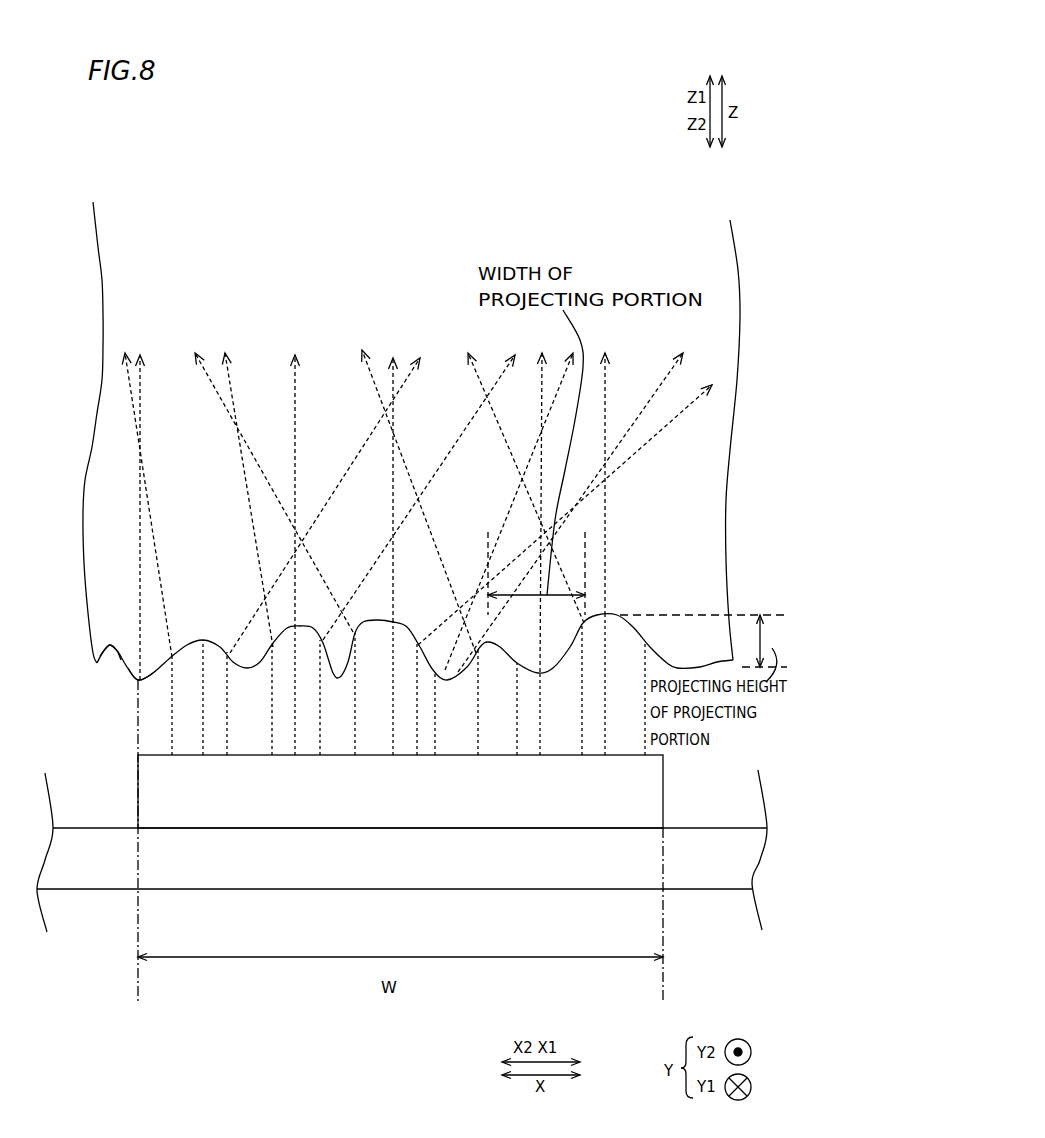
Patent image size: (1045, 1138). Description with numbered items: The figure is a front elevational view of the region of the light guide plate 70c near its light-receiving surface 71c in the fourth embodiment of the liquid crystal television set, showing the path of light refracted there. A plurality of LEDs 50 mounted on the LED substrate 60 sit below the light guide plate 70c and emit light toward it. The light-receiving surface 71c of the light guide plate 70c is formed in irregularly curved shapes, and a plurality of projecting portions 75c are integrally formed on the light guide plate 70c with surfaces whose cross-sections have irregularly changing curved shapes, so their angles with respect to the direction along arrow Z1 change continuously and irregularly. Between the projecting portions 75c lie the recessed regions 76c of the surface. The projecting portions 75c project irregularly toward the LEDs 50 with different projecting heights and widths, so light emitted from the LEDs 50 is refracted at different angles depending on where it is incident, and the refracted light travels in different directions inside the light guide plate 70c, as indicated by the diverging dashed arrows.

The light guide plate 70c is at (118, 305).
The light-receiving surface 71c is at (84, 660).
The projecting portions 75c is at (122, 665).
The recessed portion 76c is at (137, 678).
The LEDs 50 is at (138, 785).
The LED substrate 60 is at (103, 890).